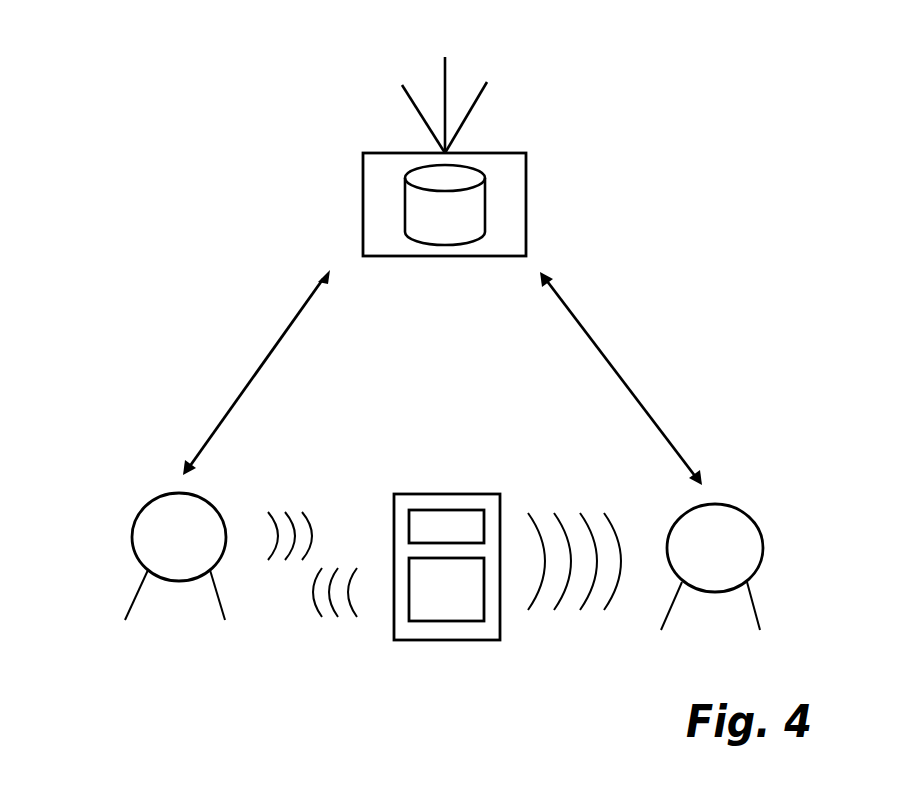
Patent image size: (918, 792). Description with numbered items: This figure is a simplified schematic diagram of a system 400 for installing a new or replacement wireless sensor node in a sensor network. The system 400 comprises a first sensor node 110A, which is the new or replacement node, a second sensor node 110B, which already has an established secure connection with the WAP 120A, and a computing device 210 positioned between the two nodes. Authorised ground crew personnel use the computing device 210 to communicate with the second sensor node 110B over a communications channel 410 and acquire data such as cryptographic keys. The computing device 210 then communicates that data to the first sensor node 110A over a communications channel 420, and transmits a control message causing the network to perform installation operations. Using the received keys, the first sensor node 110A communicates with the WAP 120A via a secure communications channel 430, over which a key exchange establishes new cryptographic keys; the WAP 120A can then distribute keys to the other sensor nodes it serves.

The system 400 is at (84, 73).
The WAP 120A is at (363, 203).
The first sensor node 110A is at (748, 518).
The second sensor node 110B is at (143, 507).
The computing device 210 is at (454, 490).
The communications channel 410 is at (306, 495).
The communications channel 420 is at (570, 497).
The secure communications channel 430 is at (652, 385).